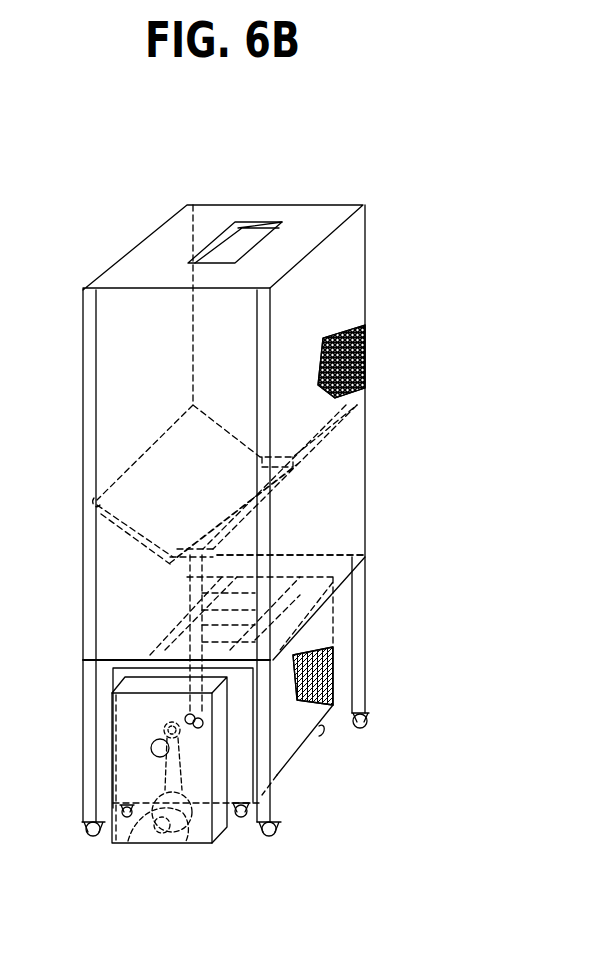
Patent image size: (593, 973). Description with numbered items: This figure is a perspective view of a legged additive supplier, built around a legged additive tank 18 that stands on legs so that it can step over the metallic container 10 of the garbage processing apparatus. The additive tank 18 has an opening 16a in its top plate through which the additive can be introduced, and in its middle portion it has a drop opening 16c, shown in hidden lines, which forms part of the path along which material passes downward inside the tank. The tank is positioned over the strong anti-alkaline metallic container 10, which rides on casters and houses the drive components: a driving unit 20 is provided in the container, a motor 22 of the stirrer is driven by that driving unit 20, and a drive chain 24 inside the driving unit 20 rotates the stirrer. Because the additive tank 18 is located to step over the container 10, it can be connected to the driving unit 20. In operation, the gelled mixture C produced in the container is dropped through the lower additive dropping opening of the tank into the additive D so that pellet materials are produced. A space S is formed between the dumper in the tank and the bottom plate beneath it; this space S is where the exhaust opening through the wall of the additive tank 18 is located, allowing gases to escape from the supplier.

The metallic container 10 is at (308, 746).
The legged additive tank 18 is at (117, 262).
The opening 16a is at (253, 228).
The drop opening 16c is at (216, 510).
The driving unit 20 is at (197, 850).
The motor 22 is at (126, 845).
The drive chain 24 is at (156, 772).
The additive D is at (365, 360).
The space S is at (322, 516).
The gelled mixture C is at (333, 684).